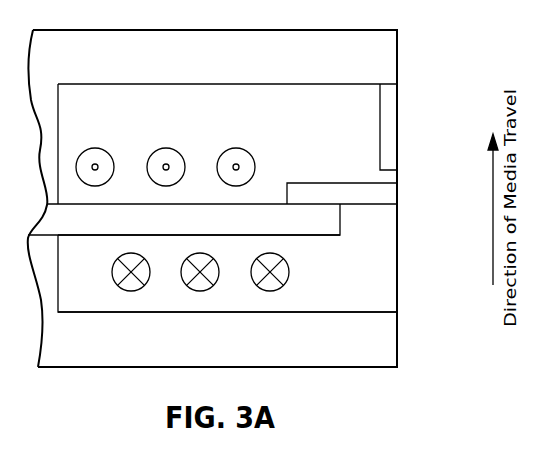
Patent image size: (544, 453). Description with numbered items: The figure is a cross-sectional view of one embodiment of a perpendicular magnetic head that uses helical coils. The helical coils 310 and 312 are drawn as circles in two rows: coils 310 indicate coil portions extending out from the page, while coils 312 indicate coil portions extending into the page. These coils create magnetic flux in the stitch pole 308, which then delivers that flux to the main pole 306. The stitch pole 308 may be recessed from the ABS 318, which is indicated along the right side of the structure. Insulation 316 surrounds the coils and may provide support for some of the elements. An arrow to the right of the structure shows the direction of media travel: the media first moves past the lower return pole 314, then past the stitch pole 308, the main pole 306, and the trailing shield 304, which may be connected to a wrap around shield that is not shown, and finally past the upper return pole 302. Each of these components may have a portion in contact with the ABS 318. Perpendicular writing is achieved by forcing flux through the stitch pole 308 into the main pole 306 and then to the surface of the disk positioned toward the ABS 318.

The upper return pole 302 is at (267, 66).
The trailing shield 304 is at (398, 133).
The main pole 306 is at (398, 190).
The stitch pole 308 is at (211, 230).
The helical coils (extending out from the page) 310 is at (92, 149).
The helical coils (extending into the page) 312 is at (113, 278).
The lower return pole 314 is at (211, 351).
The insulation 316 is at (305, 140).
The ABS 318 is at (398, 48).